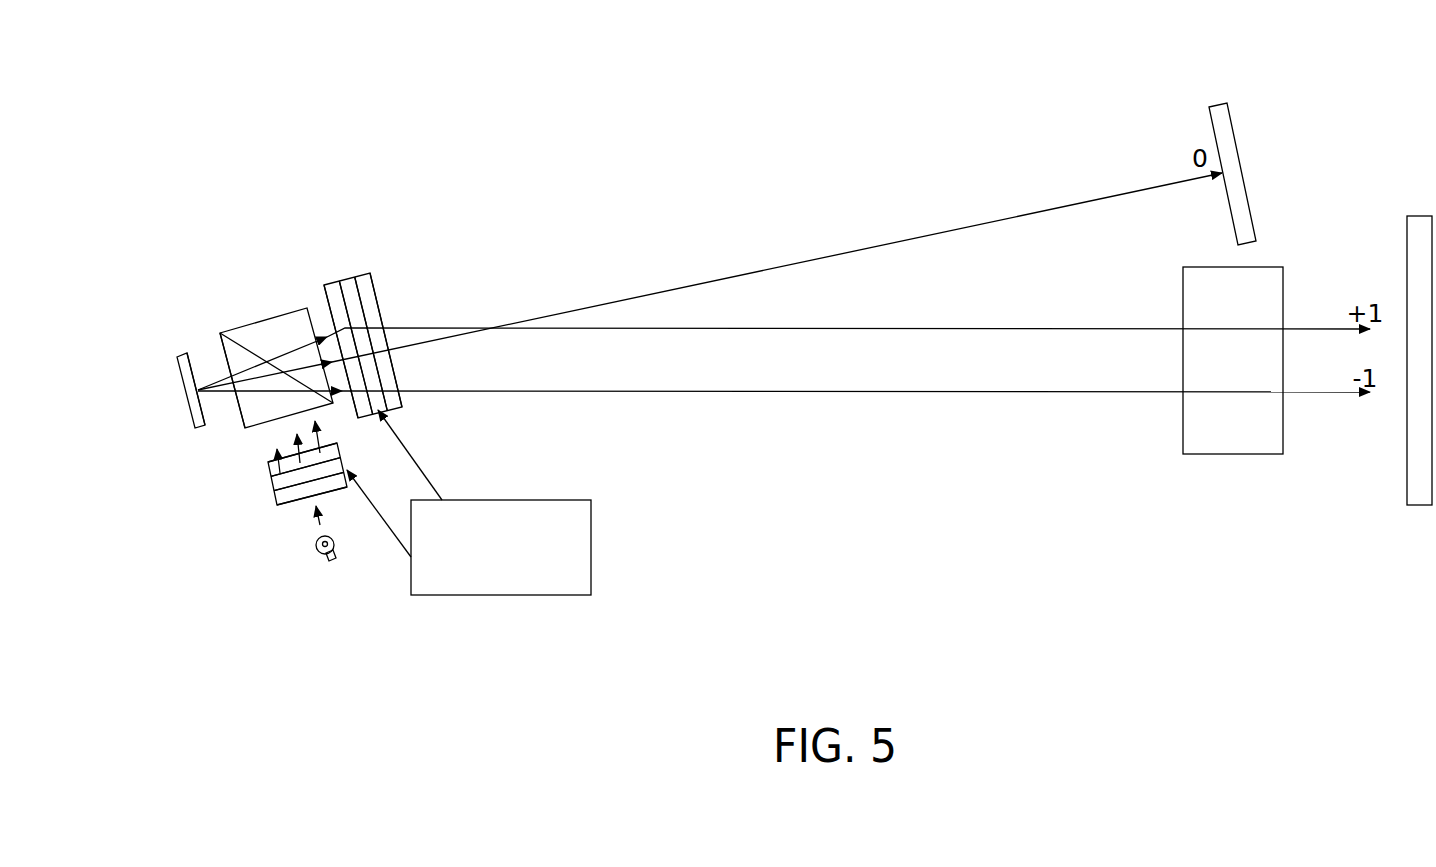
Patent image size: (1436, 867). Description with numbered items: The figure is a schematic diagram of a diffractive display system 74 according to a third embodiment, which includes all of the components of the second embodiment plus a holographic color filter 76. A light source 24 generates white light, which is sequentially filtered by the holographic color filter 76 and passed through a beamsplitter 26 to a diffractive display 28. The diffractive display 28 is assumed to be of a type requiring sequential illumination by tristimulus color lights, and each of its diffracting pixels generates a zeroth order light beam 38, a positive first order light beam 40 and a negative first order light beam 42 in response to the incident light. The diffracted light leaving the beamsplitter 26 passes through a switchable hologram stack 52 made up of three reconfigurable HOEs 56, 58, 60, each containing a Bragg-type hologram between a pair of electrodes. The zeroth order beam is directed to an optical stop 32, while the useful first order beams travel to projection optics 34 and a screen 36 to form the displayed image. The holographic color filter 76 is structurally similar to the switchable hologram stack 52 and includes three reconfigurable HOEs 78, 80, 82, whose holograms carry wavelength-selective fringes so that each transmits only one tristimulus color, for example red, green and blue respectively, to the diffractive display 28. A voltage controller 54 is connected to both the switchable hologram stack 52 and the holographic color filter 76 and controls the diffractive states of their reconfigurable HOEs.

The light source 24 is at (334, 560).
The beamsplitter 26 is at (307, 306).
The diffractive display 28 is at (176, 357).
The optical stop 32 is at (1232, 125).
The projection optics 34 is at (1240, 455).
The screen 36 is at (1428, 508).
The zeroth order light beam 38 is at (250, 352).
The first order (+1) light beam 40 is at (219, 377).
The first order (-1) light beam 42 is at (208, 398).
The switchable hologram stack 52 is at (388, 318).
The voltage controller 54 is at (568, 500).
The reconfigurable HOE 56 is at (338, 297).
The reconfigurable HOE 58 is at (357, 315).
The reconfigurable HOE 60 is at (373, 322).
The diffractive display system 74 is at (1338, 63).
The holographic color filter 76 is at (279, 494).
The reconfigurable HOE 78 is at (268, 464).
The reconfigurable HOE 80 is at (270, 490).
The reconfigurable HOE 82 is at (279, 497).